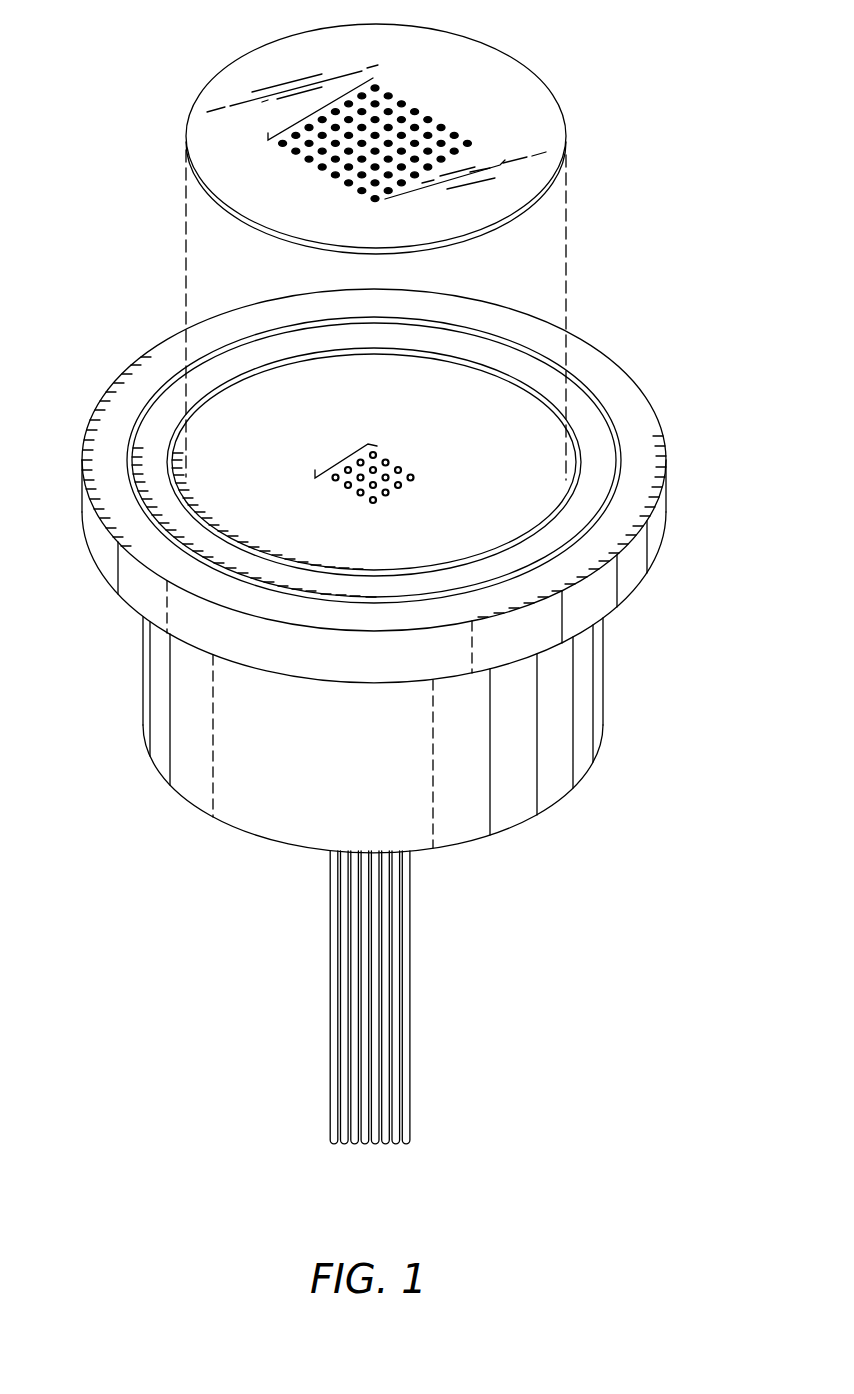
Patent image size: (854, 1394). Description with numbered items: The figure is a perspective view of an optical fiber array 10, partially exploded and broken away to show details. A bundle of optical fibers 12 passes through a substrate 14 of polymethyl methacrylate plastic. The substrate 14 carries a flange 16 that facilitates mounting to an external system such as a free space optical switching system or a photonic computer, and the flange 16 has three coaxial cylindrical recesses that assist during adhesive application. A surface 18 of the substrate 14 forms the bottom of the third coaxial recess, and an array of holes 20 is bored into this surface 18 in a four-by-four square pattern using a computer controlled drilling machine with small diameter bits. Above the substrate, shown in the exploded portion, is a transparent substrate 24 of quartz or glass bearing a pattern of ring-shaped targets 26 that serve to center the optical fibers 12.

The optical fiber array 10 is at (537, 955).
The optical fibers 12 is at (413, 1153).
The substrate 14 is at (590, 336).
The flange 16 is at (104, 422).
The surface 18 is at (293, 483).
The array of holes 20 is at (337, 457).
The transparent substrate 24 is at (520, 55).
The targets 26 is at (318, 108).